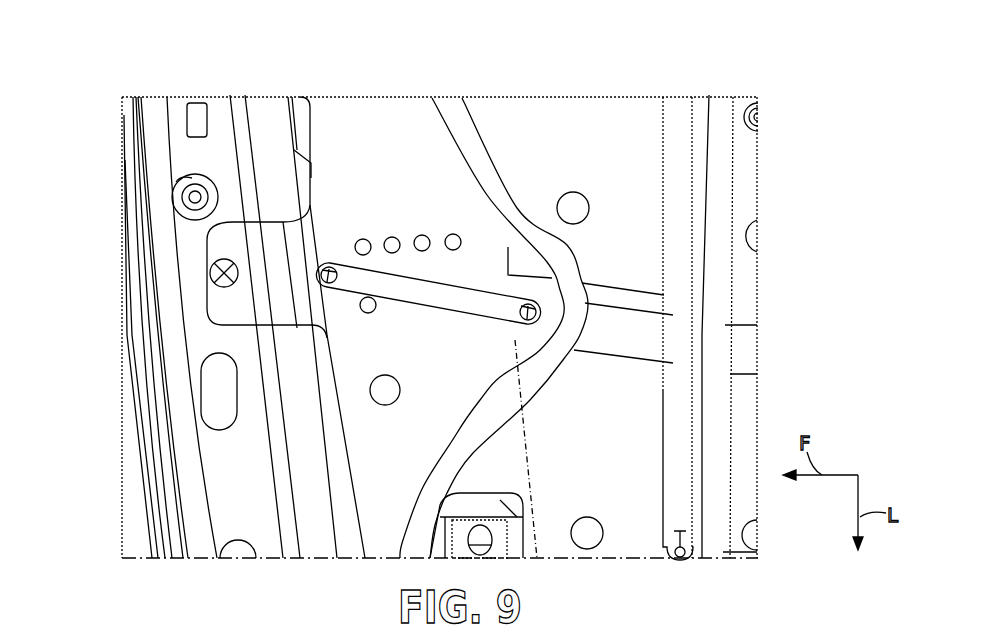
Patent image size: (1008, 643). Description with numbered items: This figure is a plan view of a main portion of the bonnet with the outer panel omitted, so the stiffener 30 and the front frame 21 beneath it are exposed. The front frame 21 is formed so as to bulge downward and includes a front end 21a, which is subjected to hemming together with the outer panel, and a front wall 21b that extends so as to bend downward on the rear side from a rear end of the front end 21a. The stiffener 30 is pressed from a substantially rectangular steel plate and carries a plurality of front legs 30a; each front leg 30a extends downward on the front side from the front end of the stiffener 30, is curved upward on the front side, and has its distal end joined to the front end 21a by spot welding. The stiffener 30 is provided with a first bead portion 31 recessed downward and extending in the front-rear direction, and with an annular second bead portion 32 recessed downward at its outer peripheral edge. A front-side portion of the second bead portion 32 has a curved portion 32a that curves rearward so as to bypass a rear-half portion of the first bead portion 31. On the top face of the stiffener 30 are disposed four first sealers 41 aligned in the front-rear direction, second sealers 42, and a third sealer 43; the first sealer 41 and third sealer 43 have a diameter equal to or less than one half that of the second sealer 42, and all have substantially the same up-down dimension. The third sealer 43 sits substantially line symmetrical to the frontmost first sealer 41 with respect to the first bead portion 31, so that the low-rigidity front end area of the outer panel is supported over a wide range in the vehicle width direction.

The front frame 21 is at (168, 403).
The front end 21a is at (222, 453).
The front wall 21b is at (310, 500).
The stiffener 30 is at (308, 143).
The front leg 30a is at (218, 245).
The first bead portion 31 is at (450, 305).
The second bead portion 32 is at (489, 150).
The curved portion 32a is at (575, 258).
The first sealer 41 is at (453, 234).
The second sealer 42 is at (580, 200).
The third sealer 43 is at (372, 311).